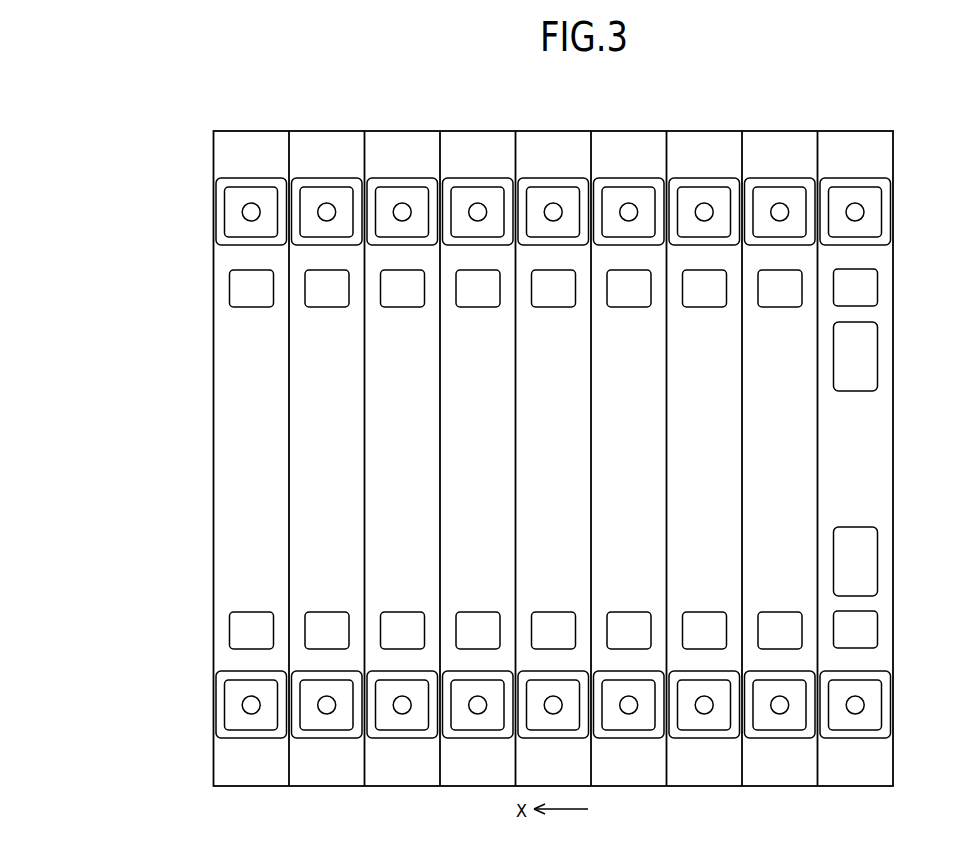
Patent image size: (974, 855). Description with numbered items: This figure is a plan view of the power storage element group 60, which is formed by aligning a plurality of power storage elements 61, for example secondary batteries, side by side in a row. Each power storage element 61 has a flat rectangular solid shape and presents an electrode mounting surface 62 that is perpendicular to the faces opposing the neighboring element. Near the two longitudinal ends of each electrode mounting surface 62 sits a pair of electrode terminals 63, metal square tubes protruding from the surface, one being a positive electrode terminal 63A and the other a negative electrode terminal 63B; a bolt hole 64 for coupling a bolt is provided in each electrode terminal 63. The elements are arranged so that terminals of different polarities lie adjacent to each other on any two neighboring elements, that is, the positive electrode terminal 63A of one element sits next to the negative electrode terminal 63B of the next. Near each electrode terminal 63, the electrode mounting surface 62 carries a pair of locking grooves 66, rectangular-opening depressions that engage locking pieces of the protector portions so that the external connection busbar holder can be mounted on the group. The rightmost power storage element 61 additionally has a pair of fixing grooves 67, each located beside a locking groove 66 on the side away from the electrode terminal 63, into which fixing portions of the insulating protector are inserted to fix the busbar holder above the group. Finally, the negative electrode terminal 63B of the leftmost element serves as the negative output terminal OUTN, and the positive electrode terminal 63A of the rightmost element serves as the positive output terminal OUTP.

The power storage element group 60 is at (652, 817).
The power storage element 61 is at (251, 152).
The electrode mounting surface 62 is at (883, 464).
The electrode terminal 63 is at (516, 458).
The positive electrode terminal 63A is at (240, 203).
The negative electrode terminal 63B is at (763, 202).
The bolt hole 64 is at (860, 213).
The locking groove 66 is at (847, 270).
The fixing groove 67 is at (855, 322).
The positive output terminal OUTP is at (845, 202).
The negative output terminal OUTN is at (240, 693).